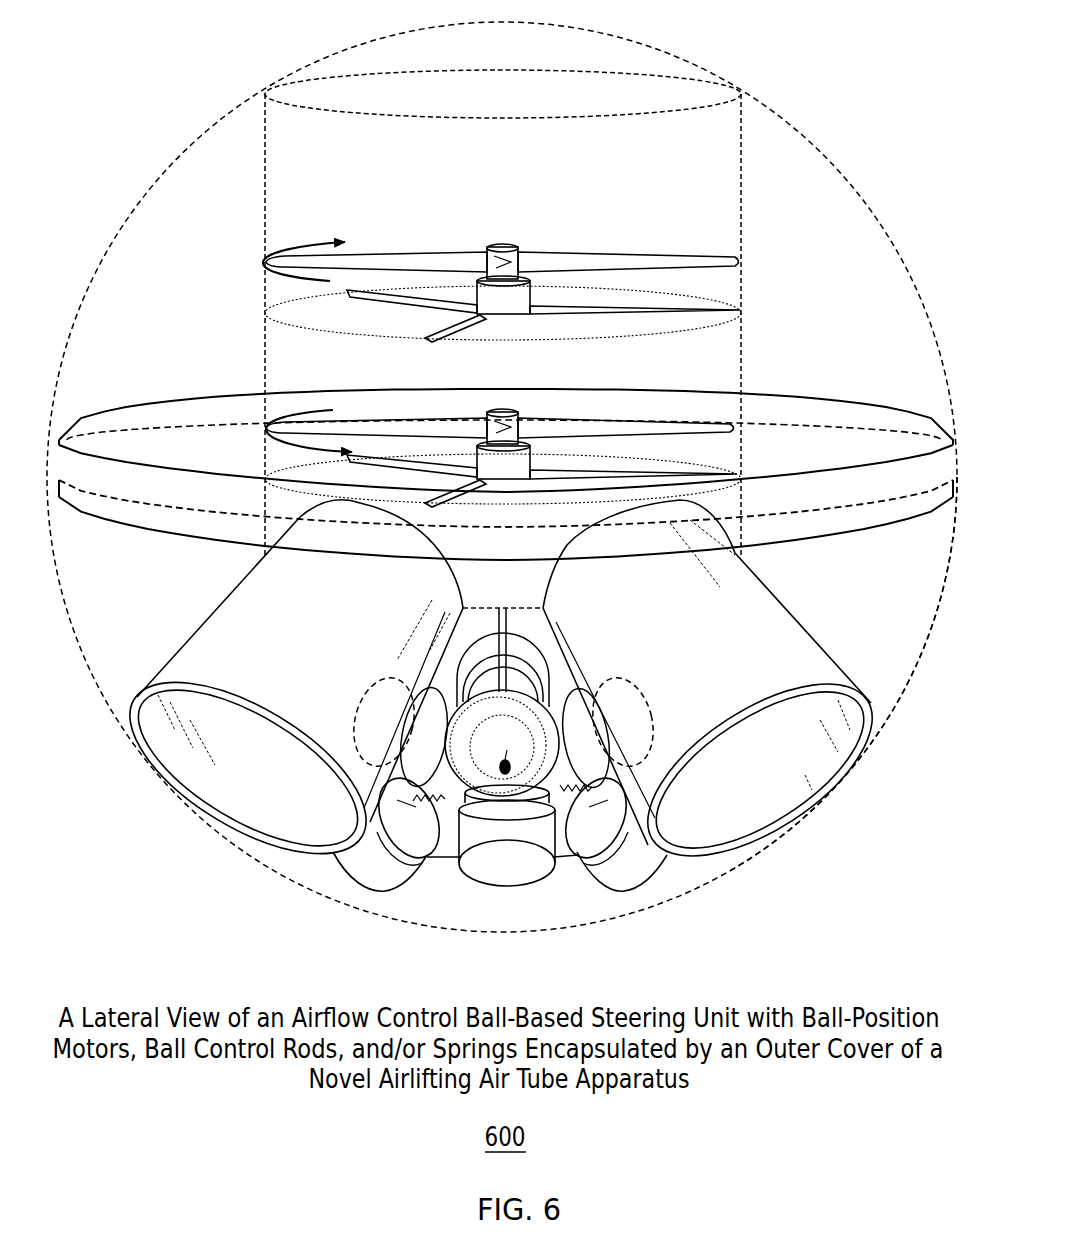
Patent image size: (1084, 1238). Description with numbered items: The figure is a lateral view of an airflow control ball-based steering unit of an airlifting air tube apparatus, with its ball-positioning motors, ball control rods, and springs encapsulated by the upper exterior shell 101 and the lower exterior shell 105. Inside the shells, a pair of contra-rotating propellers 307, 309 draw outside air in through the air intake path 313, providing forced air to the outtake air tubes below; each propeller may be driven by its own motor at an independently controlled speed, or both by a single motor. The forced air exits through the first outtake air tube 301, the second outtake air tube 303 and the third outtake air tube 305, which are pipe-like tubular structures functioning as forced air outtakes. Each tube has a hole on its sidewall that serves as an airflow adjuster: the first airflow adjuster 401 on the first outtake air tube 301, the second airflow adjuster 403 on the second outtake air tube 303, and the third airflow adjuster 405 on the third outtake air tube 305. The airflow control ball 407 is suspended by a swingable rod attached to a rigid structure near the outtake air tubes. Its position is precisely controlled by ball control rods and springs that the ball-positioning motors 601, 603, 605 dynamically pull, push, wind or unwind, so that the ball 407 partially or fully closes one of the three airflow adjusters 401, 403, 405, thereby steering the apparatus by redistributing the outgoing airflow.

The upper exterior shell 101 is at (838, 160).
The lower exterior shell 105 is at (923, 660).
The first outtake air tube 301 is at (283, 694).
The second outtake air tube 303 is at (437, 857).
The third outtake air tube 305 is at (721, 695).
The propeller 307 is at (503, 443).
The propeller 309 is at (502, 275).
The air intake path 313 is at (265, 170).
The first airflow adjuster 401 is at (385, 710).
The second airflow adjuster 403 is at (503, 657).
The third airflow adjuster 405 is at (628, 712).
The airflow control ball 407 is at (502, 743).
The ball-positioning motor 601 is at (402, 822).
The ball-positioning motor 603 is at (507, 835).
The ball-positioning motor 605 is at (604, 820).